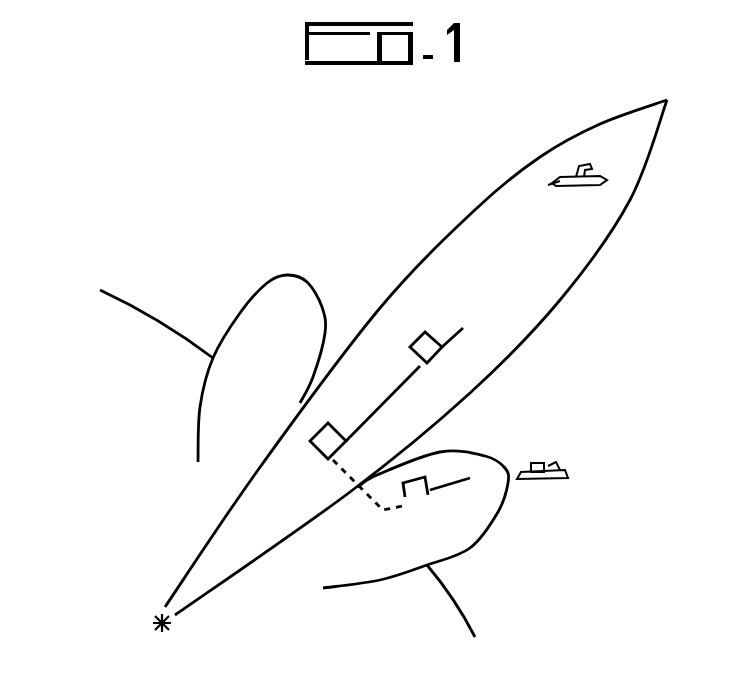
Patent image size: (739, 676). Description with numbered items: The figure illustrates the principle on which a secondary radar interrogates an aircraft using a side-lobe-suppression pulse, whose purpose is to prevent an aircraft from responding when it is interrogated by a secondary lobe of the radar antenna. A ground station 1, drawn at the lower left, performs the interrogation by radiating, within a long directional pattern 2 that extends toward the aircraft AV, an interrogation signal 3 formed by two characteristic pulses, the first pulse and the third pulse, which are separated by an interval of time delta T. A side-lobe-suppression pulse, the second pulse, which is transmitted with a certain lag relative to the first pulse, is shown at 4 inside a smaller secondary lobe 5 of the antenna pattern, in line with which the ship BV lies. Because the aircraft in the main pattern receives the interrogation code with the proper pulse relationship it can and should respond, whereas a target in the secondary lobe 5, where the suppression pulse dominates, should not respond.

The ground station 1 is at (162, 620).
The directional pattern 2 is at (477, 210).
The interrogation signal 3 is at (316, 458).
The side-lobe-suppression pulse P2 4 is at (448, 487).
The secondary lobe 5 is at (461, 548).